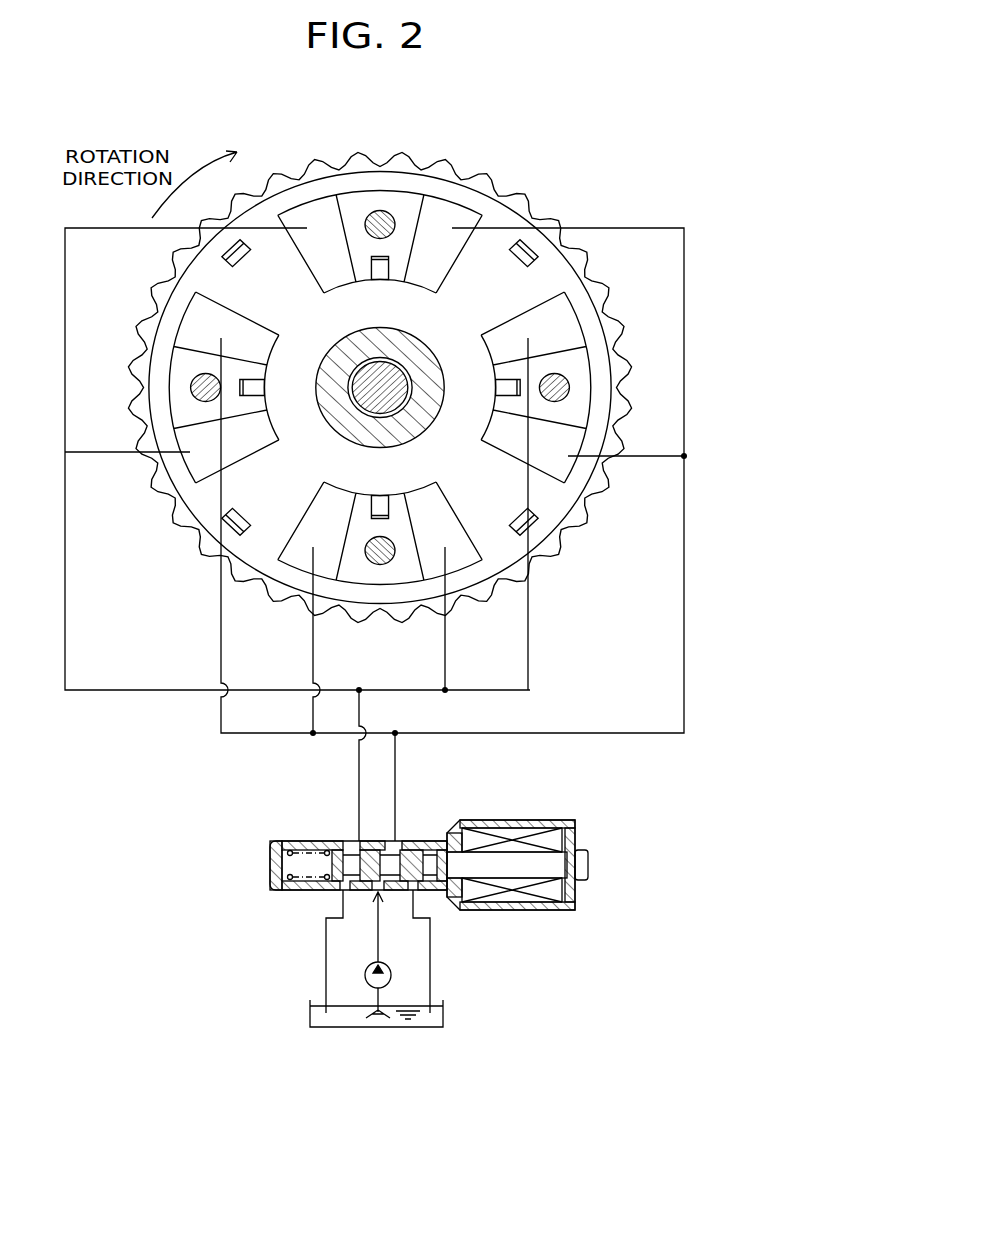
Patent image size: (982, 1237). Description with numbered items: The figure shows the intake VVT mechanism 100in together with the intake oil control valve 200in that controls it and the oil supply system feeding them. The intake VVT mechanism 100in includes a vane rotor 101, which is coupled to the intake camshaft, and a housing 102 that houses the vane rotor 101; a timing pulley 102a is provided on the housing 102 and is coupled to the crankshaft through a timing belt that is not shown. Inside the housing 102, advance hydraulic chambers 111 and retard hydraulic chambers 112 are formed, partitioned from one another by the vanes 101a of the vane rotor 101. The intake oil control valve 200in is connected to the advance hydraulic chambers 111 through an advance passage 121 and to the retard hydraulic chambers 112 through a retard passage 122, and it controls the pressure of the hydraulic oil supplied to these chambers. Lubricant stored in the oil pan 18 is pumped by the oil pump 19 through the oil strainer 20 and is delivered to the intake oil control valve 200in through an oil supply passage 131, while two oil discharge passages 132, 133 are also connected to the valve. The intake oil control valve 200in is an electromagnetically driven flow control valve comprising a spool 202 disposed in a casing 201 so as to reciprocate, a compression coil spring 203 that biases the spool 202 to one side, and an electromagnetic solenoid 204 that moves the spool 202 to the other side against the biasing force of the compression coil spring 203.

The intake VVT mechanism 100in is at (521, 170).
The vane rotor 101 is at (305, 328).
The vanes 101a is at (227, 283).
The housing 102 is at (396, 165).
The timing pulley 102a is at (557, 213).
The advance hydraulic chambers 111 is at (452, 254).
The retard hydraulic chambers 112 is at (342, 254).
The advance passage 121 is at (397, 757).
The retard passage 122 is at (357, 760).
The intake oil control valve 200in is at (587, 810).
The casing 201 is at (305, 840).
The spool 202 is at (414, 856).
The compression coil spring 203 is at (268, 868).
The electromagnetic solenoid 204 is at (510, 828).
The oil supply passage 131 is at (378, 952).
The oil discharge passage 132 is at (430, 963).
The oil discharge passage 133 is at (326, 970).
The oil pan 18 is at (310, 1013).
The oil pump 19 is at (392, 975).
The oil strainer 20 is at (378, 1028).